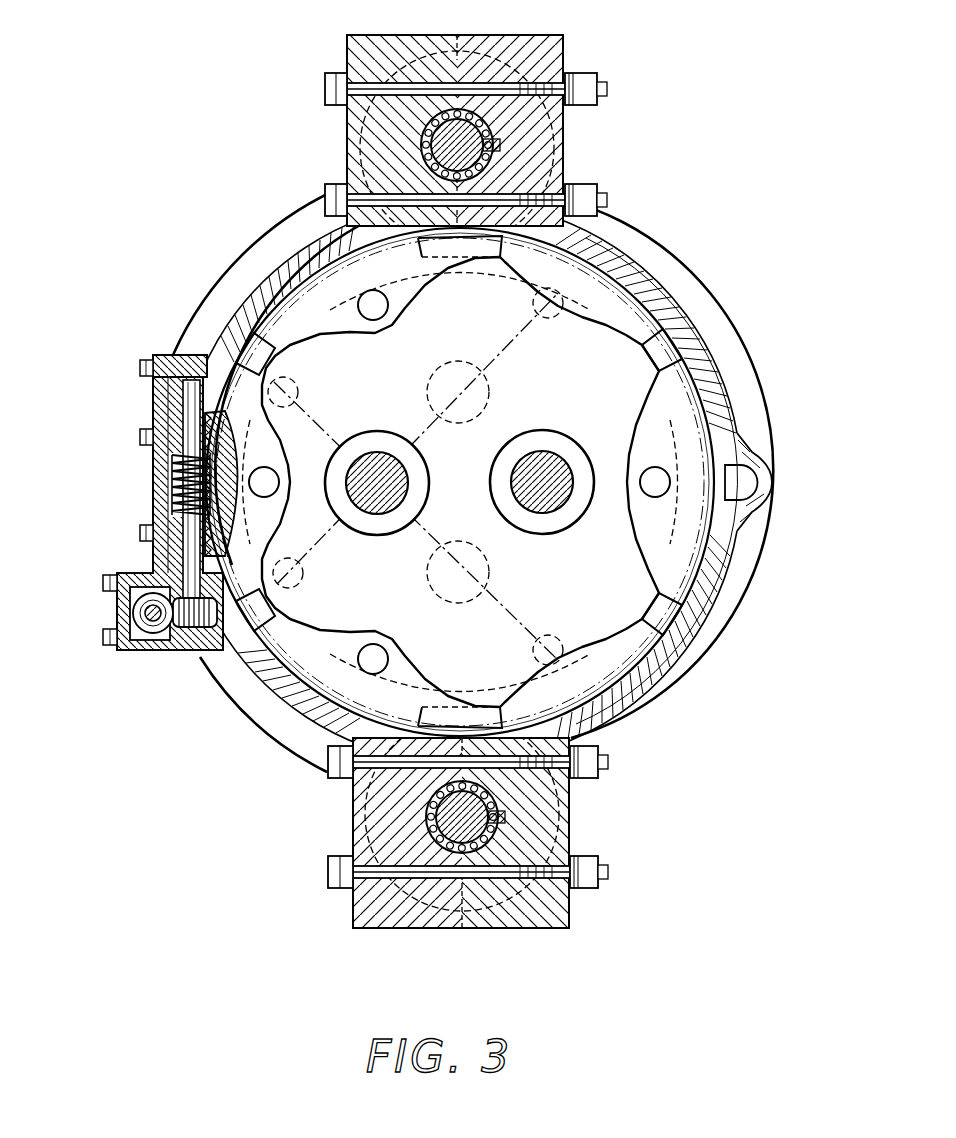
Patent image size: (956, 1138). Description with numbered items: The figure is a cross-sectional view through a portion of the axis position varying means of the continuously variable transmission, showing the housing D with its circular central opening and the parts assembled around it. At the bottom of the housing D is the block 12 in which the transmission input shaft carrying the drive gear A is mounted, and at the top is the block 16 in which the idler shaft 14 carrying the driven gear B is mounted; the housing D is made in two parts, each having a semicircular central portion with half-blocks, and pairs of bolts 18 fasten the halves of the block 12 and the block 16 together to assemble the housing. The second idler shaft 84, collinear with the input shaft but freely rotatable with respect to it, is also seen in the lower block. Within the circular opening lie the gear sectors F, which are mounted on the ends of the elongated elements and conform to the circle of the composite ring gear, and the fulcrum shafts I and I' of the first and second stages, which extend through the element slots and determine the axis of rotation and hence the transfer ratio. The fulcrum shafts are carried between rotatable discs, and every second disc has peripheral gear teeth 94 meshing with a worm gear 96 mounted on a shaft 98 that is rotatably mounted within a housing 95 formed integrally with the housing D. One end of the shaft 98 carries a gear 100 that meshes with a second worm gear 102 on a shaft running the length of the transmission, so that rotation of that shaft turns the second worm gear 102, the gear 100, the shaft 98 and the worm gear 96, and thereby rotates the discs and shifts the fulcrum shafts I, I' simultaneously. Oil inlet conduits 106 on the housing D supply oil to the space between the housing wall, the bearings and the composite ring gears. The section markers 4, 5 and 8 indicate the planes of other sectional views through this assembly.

The block 12 is at (556, 906).
The idler shaft 14 is at (432, 138).
The block 16 is at (548, 46).
The bolts 18 is at (333, 192).
The second idler shaft 84 is at (490, 818).
The peripheral gear teeth 94 is at (205, 356).
The housing 95 is at (192, 405).
The worm gear 96 is at (190, 488).
The shaft 98 is at (218, 428).
The gear 100 is at (230, 662).
The second worm gear 102 is at (108, 582).
The oil inlet conduits 106 is at (150, 626).
The drive gear A is at (514, 134).
The driven gear B is at (528, 831).
The housing D is at (708, 278).
The gear sector F is at (586, 292).
The fulcrum shaft I is at (542, 459).
The fulcrum shaft I' is at (389, 483).
The section line 4- 4 is at (814, 487).
The section line 5- 5 is at (95, 536).
The section line 8- 8 is at (192, 282).